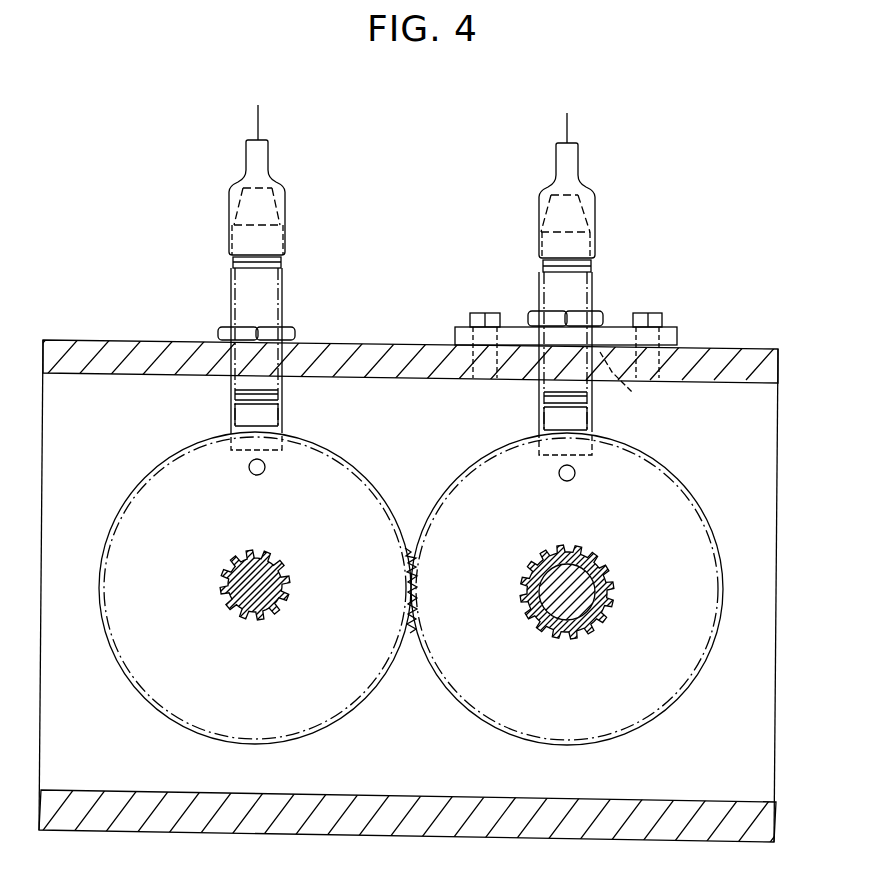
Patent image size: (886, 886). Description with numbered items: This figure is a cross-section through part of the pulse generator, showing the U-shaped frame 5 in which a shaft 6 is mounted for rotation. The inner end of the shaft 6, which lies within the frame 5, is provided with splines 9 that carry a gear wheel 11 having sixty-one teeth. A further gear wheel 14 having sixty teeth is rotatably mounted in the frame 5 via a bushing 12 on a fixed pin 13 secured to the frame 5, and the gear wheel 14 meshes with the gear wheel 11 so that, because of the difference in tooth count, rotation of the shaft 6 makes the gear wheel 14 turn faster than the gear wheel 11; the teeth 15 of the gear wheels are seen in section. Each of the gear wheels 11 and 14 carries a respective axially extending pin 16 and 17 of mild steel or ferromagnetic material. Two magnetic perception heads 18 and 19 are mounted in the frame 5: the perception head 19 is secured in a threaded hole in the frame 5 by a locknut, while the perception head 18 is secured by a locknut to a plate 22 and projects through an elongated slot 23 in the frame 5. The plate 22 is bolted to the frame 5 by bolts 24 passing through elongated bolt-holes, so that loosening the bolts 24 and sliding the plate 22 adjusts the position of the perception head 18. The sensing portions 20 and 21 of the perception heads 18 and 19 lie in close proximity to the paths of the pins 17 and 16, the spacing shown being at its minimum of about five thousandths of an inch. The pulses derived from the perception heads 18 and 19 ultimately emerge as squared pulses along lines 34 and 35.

The U-shaped frame 5 is at (706, 358).
The shaft 6 is at (282, 582).
The splines 9 is at (270, 562).
The gear wheel 11 is at (345, 698).
The bushing 12 is at (597, 566).
The fixed pin 13 is at (590, 592).
The gear wheel 14 is at (670, 690).
The gear teeth 15 is at (578, 552).
The pin 16 is at (251, 475).
The pin 17 is at (561, 481).
The magnetic perception head 18 is at (592, 270).
The magnetic perception head 19 is at (232, 264).
The sensing portion 20 is at (565, 458).
The sensing portion 21 is at (252, 452).
The plate 22 is at (456, 332).
The elongated slot 23 is at (632, 385).
The bolts 24 is at (484, 312).
The line 34 is at (568, 128).
The line 35 is at (256, 122).